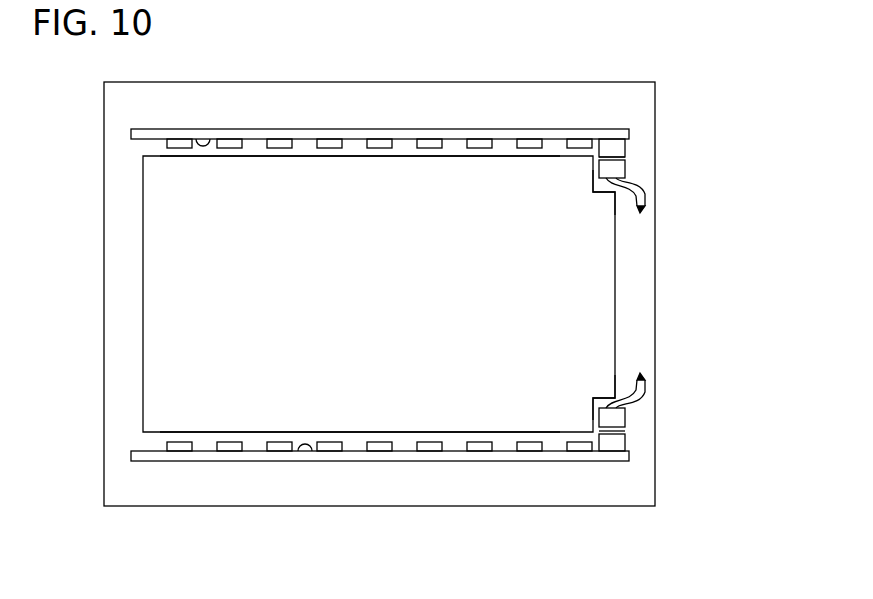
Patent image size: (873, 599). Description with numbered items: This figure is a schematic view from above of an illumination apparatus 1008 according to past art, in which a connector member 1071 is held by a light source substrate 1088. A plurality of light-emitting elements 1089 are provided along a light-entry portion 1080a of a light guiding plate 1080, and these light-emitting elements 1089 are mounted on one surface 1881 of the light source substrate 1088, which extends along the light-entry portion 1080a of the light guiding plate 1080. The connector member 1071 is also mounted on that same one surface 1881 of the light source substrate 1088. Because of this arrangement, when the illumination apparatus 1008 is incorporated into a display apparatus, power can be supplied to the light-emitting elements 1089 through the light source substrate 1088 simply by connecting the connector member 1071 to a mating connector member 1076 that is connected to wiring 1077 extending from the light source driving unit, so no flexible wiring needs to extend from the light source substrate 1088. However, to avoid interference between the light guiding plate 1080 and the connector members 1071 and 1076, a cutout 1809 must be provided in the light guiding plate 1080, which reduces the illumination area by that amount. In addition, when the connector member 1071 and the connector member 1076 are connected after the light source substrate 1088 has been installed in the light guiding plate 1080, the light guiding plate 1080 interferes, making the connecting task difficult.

The illumination apparatus 1008 is at (485, 111).
The light guiding plate 1080 is at (143, 326).
The light-entry portion 1080a is at (308, 157).
The light source substrate 1088 is at (281, 133).
The light-emitting elements 1089 is at (387, 143).
The one surface 1881 is at (199, 140).
The connector member 1071 is at (617, 147).
The connector member 1076 is at (625, 172).
The wiring 1077 is at (648, 198).
The cutout 1809 is at (602, 193).